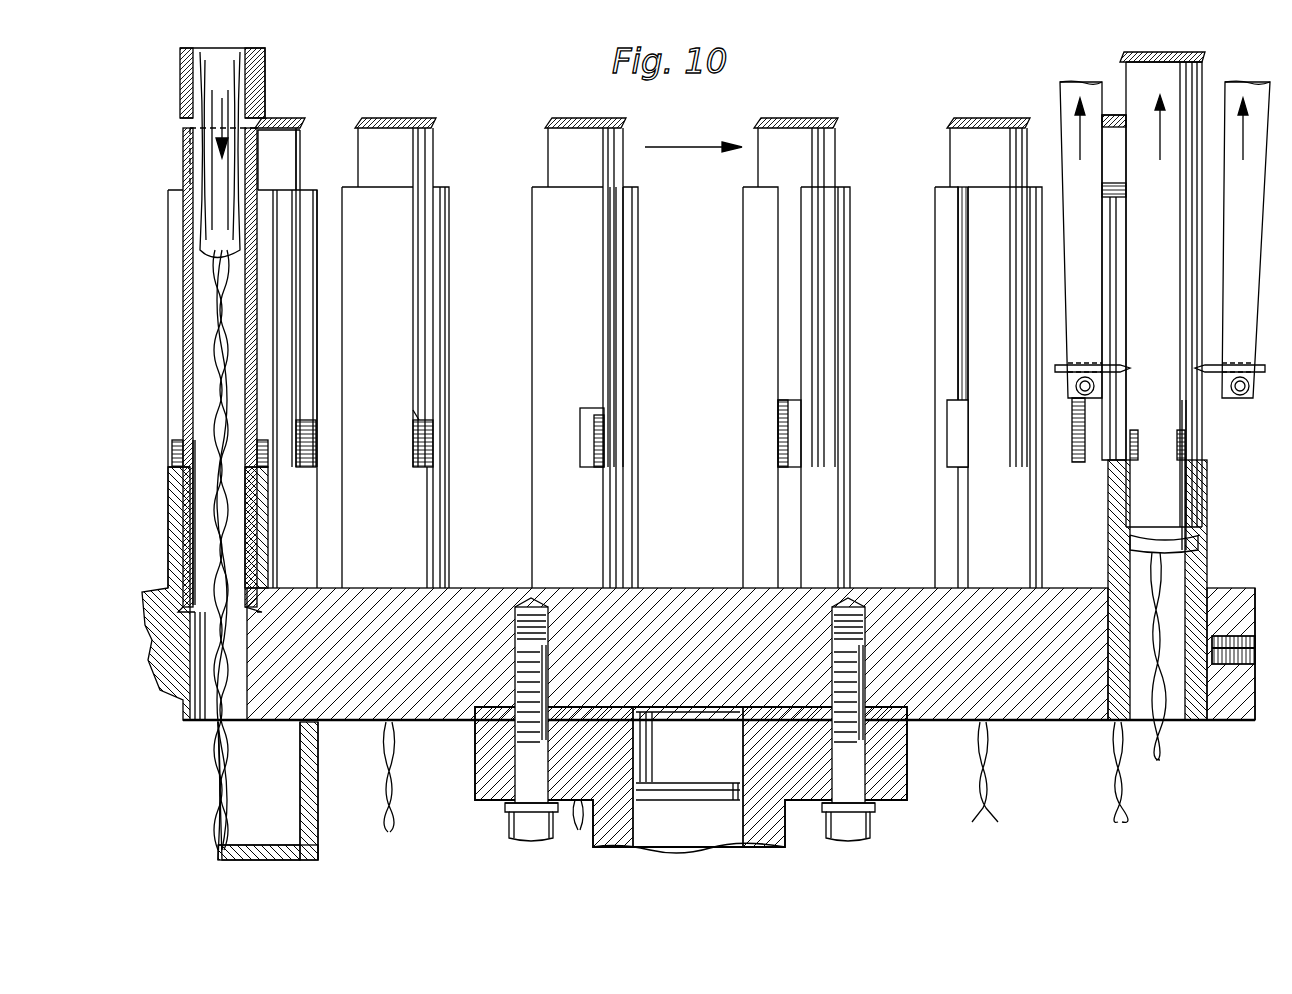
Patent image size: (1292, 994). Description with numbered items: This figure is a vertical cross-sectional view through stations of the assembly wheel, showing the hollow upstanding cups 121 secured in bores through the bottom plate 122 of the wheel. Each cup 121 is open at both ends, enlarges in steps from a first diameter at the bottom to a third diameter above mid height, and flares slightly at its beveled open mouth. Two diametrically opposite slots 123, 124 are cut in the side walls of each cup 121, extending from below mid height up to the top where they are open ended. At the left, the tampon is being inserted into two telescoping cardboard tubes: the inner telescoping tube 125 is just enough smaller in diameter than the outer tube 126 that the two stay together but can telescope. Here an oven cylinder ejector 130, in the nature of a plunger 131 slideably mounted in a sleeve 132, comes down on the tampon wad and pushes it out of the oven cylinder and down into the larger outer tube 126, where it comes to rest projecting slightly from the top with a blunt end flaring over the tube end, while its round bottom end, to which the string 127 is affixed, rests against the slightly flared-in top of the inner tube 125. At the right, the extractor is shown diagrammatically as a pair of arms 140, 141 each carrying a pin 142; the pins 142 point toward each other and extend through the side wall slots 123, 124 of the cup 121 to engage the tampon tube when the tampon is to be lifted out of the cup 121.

The cup 121 is at (170, 478).
The bottom plate 122 is at (1060, 703).
The slot 123 is at (270, 208).
The slot 124 is at (170, 368).
The inner telescoping tube 125 is at (185, 445).
The outer tube 126 is at (185, 280).
The string 127 is at (215, 405).
The oven cylinder ejector 130 is at (178, 68).
The plunger 131 is at (218, 78).
The sleeve 132 is at (265, 68).
The arm 140 is at (1236, 95).
The arm 141 is at (1072, 100).
The pin 142 is at (1128, 365).